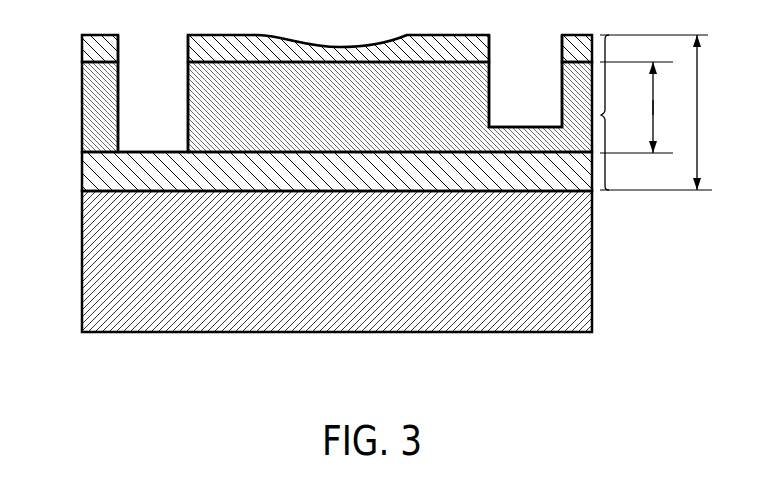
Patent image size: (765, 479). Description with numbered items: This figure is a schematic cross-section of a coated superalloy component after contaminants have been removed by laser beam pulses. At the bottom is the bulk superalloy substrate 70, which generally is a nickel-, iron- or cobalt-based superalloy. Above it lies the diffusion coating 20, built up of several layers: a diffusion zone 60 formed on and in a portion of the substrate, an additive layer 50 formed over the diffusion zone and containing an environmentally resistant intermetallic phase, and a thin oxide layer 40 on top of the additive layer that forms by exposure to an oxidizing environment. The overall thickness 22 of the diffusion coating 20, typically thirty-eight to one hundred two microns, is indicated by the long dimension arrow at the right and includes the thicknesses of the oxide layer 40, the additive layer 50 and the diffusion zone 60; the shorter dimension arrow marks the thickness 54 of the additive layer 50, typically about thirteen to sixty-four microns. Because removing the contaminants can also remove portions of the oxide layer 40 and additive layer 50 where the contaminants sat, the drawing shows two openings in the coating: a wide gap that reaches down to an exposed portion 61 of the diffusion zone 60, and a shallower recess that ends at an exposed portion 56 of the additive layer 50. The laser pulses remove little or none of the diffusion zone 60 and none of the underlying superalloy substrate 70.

The diffusion coating 20 is at (636, 107).
The thickness of diffusion coating 22 is at (697, 143).
The oxide layer 40 is at (82, 52).
The additive layer 50 is at (82, 105).
The thickness of additive layer 54 is at (653, 108).
The exposed portion of additive layer 56 is at (542, 122).
The diffusion zone 60 is at (82, 173).
The exposed portion of diffusion zone 61 is at (140, 150).
The superalloy substrate 70 is at (82, 268).